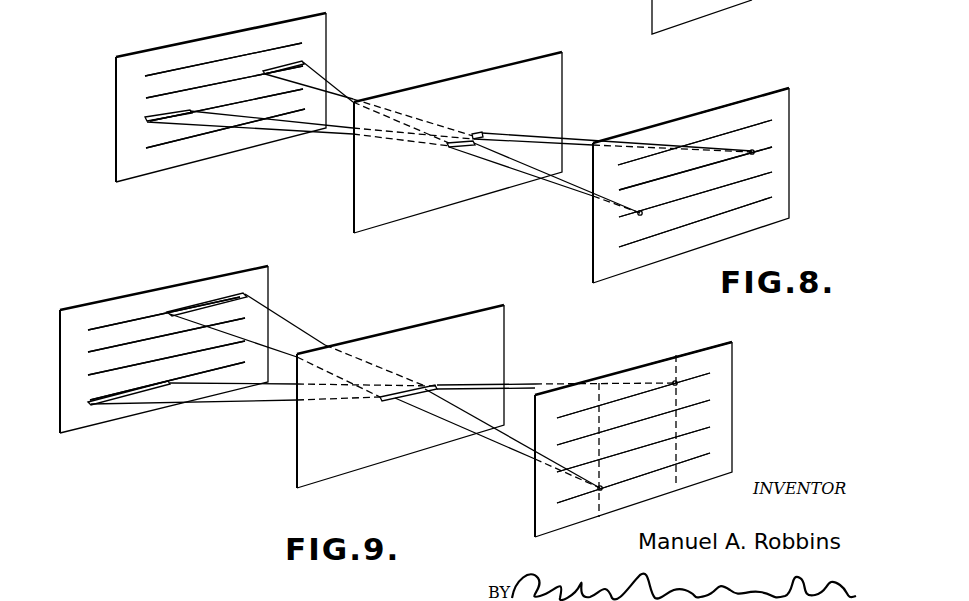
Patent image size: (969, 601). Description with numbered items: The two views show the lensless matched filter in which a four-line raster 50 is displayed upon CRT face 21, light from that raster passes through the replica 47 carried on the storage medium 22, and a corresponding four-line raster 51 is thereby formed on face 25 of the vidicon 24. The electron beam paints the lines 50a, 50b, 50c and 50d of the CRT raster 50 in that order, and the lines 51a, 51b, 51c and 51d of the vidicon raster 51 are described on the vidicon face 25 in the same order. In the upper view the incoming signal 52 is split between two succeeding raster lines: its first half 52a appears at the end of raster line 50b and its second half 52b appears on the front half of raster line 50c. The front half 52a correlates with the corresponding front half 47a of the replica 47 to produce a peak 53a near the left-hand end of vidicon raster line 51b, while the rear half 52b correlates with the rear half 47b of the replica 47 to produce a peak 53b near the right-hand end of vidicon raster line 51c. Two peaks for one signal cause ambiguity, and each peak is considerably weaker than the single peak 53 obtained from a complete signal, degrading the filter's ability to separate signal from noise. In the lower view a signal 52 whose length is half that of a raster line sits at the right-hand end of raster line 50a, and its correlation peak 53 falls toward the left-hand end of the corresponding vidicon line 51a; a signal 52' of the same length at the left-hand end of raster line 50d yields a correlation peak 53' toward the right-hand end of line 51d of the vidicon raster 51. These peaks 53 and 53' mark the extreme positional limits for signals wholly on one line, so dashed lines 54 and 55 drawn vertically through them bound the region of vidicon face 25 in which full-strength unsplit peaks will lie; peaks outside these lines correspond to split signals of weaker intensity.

In FIG. 8, the CRT face 21 is at (308, 24).
In FIG. 9, the CRT face 21 is at (255, 273).
In FIG. 8, the storage medium 22 is at (541, 54).
In FIG. 9, the storage medium 22 is at (483, 308).
In FIG. 8, the vidicon 24 is at (790, 95).
In FIG. 9, the vidicon 24 is at (733, 347).
In FIG. 8, the vidicon face 25 is at (760, 105).
In FIG. 9, the vidicon face 25 is at (712, 352).
In FIG. 9, the replica 47 is at (395, 401).
In FIG. 8, the front half of replica 47a is at (463, 147).
In FIG. 8, the rear half of replica 47b is at (474, 134).
In FIG. 8, the four-line raster 50 is at (135, 66).
In FIG. 9, the four-line raster 50 is at (73, 321).
In FIG. 8, the upper raster line 50a is at (237, 57).
In FIG. 9, the upper raster line 50a is at (150, 315).
In FIG. 8, the raster line 50b is at (237, 79).
In FIG. 9, the raster line 50b is at (157, 337).
In FIG. 8, the raster line 50c is at (252, 99).
In FIG. 9, the raster line 50c is at (158, 359).
In FIG. 8, the raster line 50d is at (295, 111).
In FIG. 9, the raster line 50d is at (222, 367).
In FIG. 8, the vidicon raster 51 is at (775, 202).
In FIG. 9, the vidicon raster 51 is at (720, 459).
In FIG. 8, the vidicon raster line 51a is at (696, 222).
In FIG. 9, the vidicon raster line 51a is at (690, 456).
In FIG. 8, the vidicon raster line 51b is at (672, 205).
In FIG. 9, the vidicon raster line 51b is at (690, 430).
In FIG. 8, the vidicon raster line 51c is at (655, 183).
In FIG. 9, the vidicon raster line 51c is at (690, 405).
In FIG. 8, the vidicon raster line 51d is at (637, 160).
In FIG. 9, the vidicon raster line 51d is at (690, 380).
In FIG. 9, the signal 52 is at (207, 289).
In FIG. 9, the signal 52' is at (129, 390).
In FIG. 8, the first half of signal 52a is at (303, 62).
In FIG. 8, the second half of signal 52b is at (146, 117).
In FIG. 9, the correlation peak 53 is at (617, 474).
In FIG. 9, the correlation peak 53' is at (654, 361).
In FIG. 8, the peak 53a is at (638, 214).
In FIG. 8, the peak 53b is at (755, 152).
In FIG. 9, the dashed line 54 is at (600, 512).
In FIG. 9, the dashed line 55 is at (676, 472).